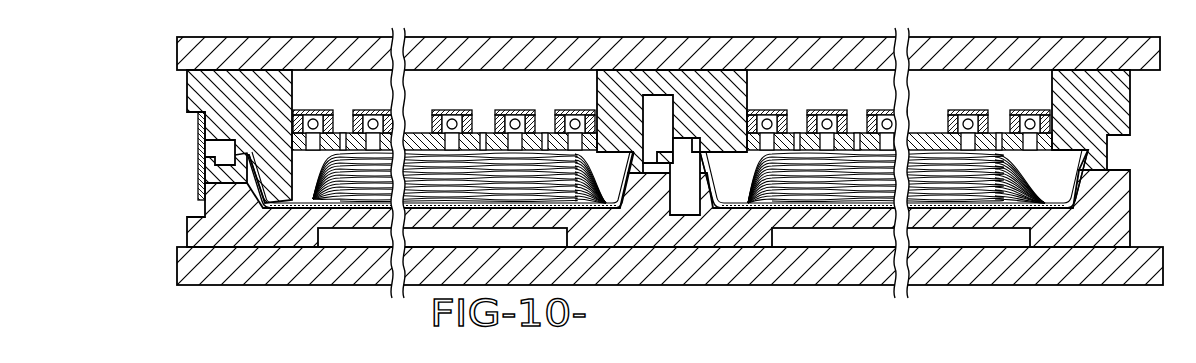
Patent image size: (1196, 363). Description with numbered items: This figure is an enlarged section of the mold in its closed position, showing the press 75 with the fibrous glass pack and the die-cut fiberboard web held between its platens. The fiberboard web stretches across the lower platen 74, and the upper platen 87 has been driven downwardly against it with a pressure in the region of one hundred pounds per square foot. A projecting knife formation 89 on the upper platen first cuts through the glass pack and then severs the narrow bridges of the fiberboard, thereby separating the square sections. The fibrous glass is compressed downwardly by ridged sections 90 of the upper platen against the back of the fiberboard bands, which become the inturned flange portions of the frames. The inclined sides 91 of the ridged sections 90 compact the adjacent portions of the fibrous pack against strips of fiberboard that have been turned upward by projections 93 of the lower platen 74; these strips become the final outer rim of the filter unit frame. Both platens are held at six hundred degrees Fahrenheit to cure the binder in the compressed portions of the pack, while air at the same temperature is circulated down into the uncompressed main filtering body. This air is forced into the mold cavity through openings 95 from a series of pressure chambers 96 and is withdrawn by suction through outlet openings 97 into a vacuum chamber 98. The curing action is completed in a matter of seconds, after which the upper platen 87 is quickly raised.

The lower platen 74 is at (257, 285).
The press 75 is at (184, 109).
The upper platen 87 is at (180, 68).
The projecting knife formation 89 is at (197, 158).
The ridged sections 90 is at (260, 177).
The inclined sides 91 is at (252, 168).
The projections 93 is at (227, 205).
The openings 95 is at (345, 152).
The pressure chambers 96 is at (316, 113).
The outlet openings 97 is at (343, 138).
The vacuum chamber 98 is at (443, 72).